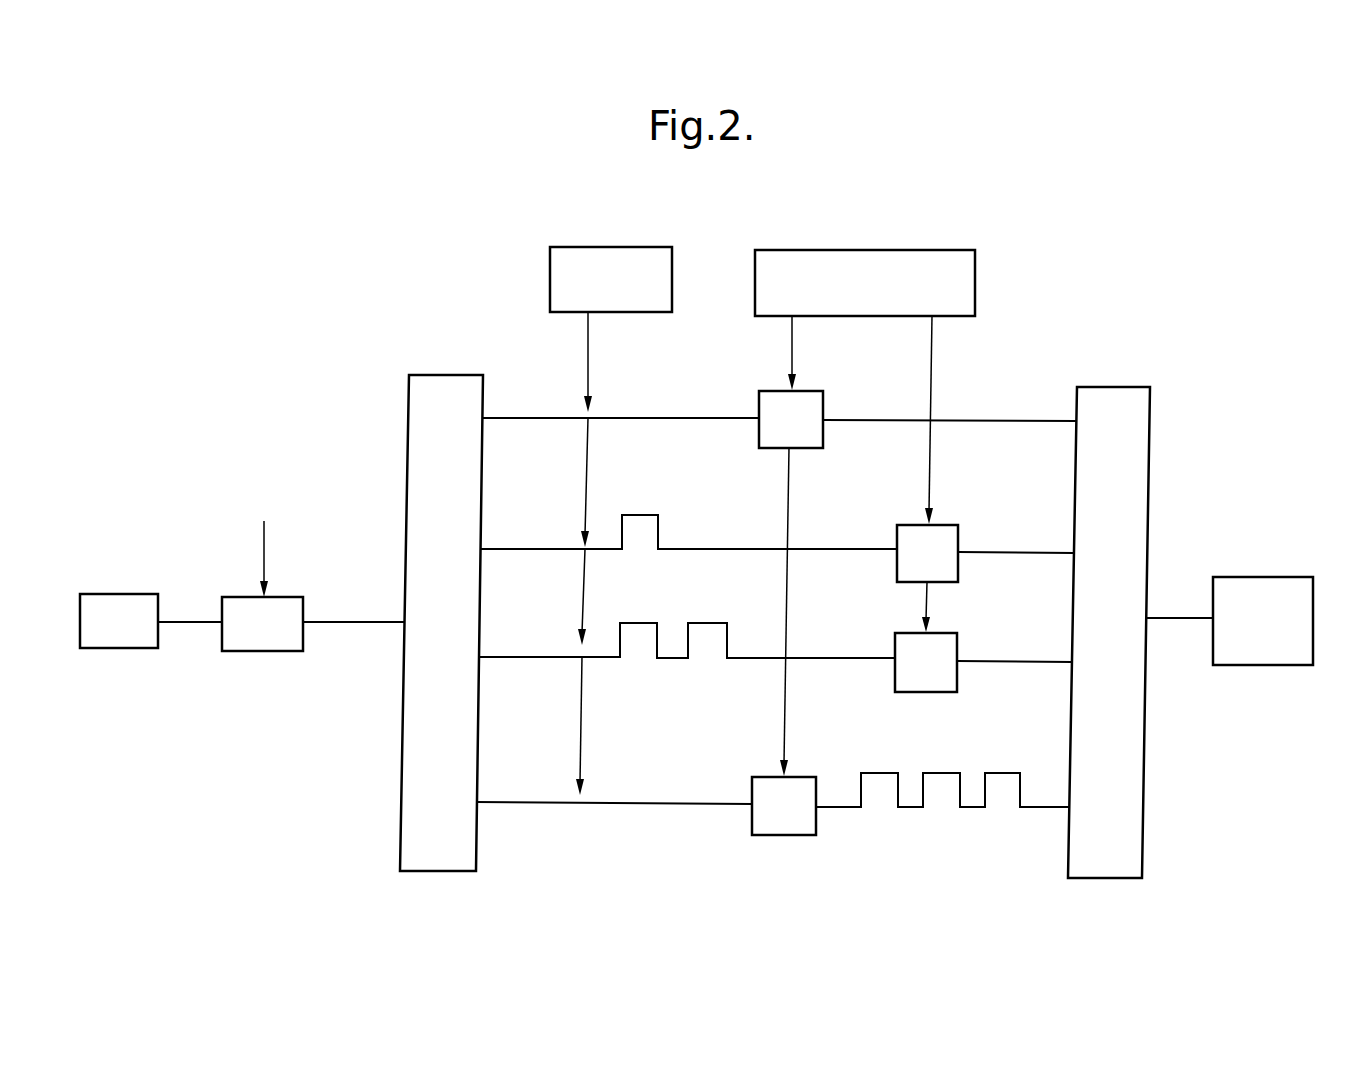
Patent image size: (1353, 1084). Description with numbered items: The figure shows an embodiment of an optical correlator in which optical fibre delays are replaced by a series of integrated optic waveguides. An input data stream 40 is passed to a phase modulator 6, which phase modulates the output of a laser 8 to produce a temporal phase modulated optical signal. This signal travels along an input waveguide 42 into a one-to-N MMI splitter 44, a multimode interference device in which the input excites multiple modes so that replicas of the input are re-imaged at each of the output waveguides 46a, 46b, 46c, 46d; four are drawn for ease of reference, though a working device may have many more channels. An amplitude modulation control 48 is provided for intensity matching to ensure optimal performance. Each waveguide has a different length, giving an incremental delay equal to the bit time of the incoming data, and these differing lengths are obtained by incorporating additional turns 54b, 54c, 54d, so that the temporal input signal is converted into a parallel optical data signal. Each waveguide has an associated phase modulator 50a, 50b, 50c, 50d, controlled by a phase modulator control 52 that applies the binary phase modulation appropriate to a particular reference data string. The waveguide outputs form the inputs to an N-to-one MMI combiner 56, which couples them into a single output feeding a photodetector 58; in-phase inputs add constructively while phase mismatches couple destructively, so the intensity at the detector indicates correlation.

The laser 8 is at (121, 605).
The phase modulator 6 is at (264, 635).
The input data stream 40 is at (264, 535).
The input waveguide 42 is at (369, 621).
The 1-N MMI splitter 44 is at (441, 848).
The amplitude modulation control 48 is at (593, 265).
The phase modulator control 52 is at (867, 267).
The output waveguide 46a is at (615, 415).
The output waveguide 46b is at (528, 547).
The output waveguide 46c is at (527, 655).
The output waveguide 46d is at (530, 800).
The phase modulator 50a is at (802, 408).
The phase modulator 50b is at (947, 548).
The phase modulator 50c is at (943, 653).
The phase modulator 50d is at (785, 812).
The additional turn 54b is at (674, 531).
The additional turn 54c is at (669, 611).
The additional turn 54d is at (938, 751).
The MMI N-1 combiner 56 is at (1117, 407).
The photodetector 58 is at (1273, 595).